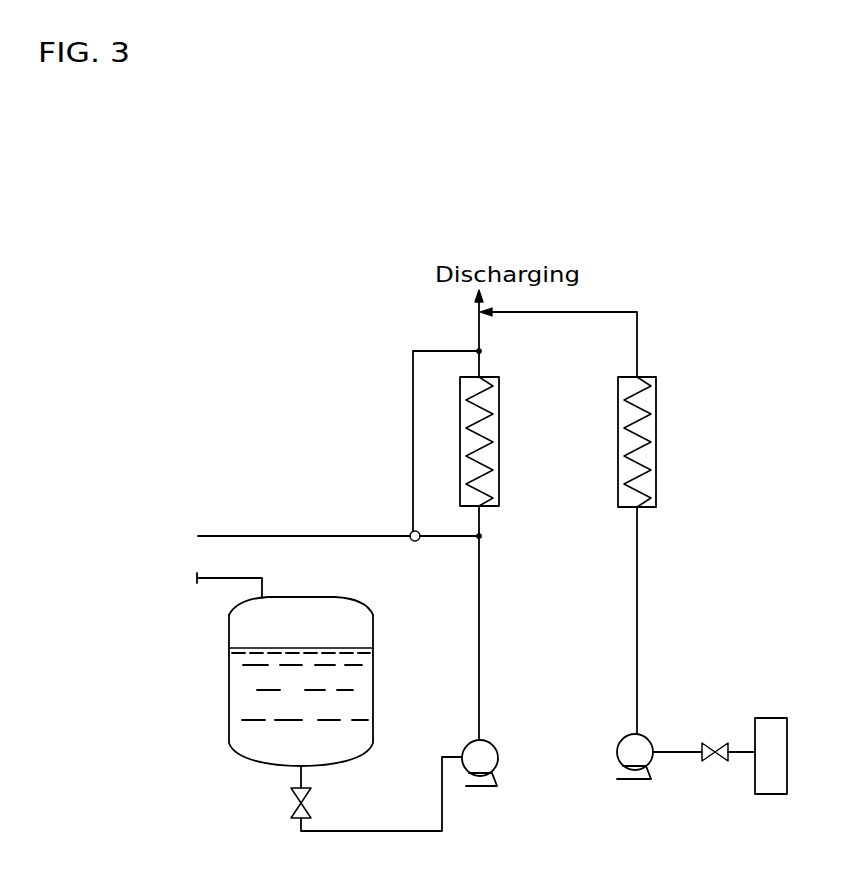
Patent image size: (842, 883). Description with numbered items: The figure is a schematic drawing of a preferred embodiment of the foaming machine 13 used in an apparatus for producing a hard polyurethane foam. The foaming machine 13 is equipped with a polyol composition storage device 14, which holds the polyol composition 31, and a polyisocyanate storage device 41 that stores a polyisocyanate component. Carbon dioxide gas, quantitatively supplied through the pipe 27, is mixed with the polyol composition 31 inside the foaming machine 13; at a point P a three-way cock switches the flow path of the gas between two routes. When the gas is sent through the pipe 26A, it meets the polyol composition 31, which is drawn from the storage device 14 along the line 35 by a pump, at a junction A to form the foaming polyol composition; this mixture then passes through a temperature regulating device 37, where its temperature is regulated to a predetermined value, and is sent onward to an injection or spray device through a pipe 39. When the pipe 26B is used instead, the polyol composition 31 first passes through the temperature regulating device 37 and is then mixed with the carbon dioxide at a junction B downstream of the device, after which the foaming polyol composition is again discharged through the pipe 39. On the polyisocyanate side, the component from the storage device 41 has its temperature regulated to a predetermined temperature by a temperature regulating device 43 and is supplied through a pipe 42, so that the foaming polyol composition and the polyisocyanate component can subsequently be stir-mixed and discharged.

The foaming machine 13 is at (714, 328).
The polyol composition storage device 14 is at (354, 598).
The pipe 26A is at (445, 539).
The pipe 26B is at (412, 376).
The pipe 27 is at (306, 533).
The polyol composition 31 is at (363, 702).
The circulation pipe with pump 35 is at (481, 697).
The temperature regulating device 37 is at (491, 437).
The pipe 39 is at (477, 330).
The polyisocyanate storage device 41 is at (763, 795).
The pipe 42 is at (641, 339).
The temperature regulating device 43 is at (648, 452).
The point P is at (409, 532).
The junction A is at (487, 536).
The junction B is at (487, 350).